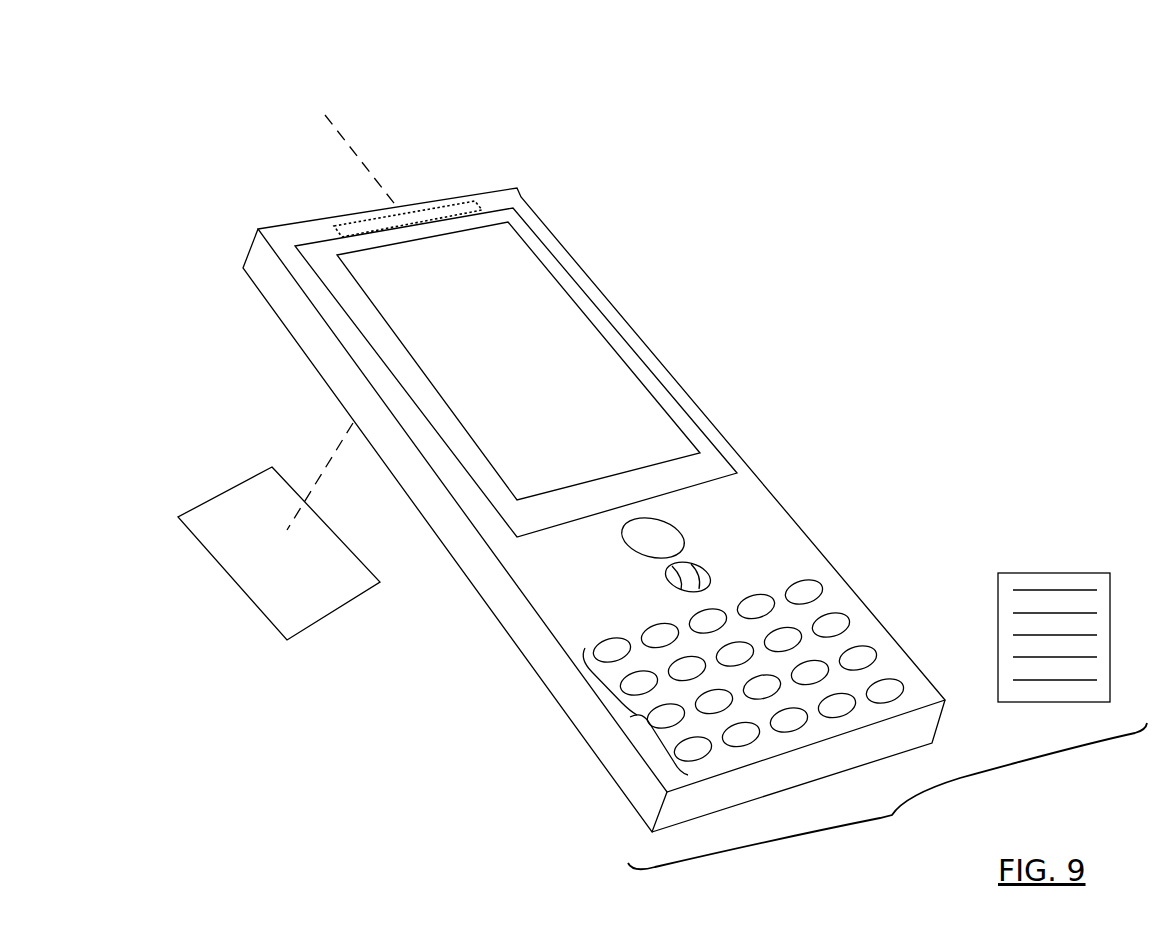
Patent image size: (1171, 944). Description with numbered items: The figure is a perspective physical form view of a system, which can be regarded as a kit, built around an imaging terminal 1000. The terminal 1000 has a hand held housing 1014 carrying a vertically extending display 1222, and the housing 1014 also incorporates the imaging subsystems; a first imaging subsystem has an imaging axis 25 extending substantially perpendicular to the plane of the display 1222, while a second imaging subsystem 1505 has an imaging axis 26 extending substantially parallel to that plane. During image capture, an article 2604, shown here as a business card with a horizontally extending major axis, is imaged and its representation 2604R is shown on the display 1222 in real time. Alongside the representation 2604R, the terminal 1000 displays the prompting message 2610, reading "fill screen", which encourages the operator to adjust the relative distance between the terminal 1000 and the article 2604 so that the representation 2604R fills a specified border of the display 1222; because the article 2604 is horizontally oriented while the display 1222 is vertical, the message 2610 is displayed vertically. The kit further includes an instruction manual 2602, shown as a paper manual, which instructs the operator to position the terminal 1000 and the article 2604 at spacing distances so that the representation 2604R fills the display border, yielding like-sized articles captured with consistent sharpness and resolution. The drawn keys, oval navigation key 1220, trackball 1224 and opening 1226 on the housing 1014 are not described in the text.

The imaging terminal 1000 is at (533, 115).
The prompting message 2610 is at (322, 251).
The imaging subsystem 1505 is at (478, 208).
The display 1222 is at (718, 472).
The representation of article 2604R is at (603, 331).
The oval navigation key 1220 is at (677, 528).
The trackball 1224 is at (712, 568).
The hand held housing 1014 is at (843, 603).
The microphone opening 1226 is at (630, 718).
The imaging axis 26 is at (363, 164).
The imaging axis 25 is at (340, 450).
The article 2604 is at (353, 596).
The instruction manual 2602 is at (1057, 571).